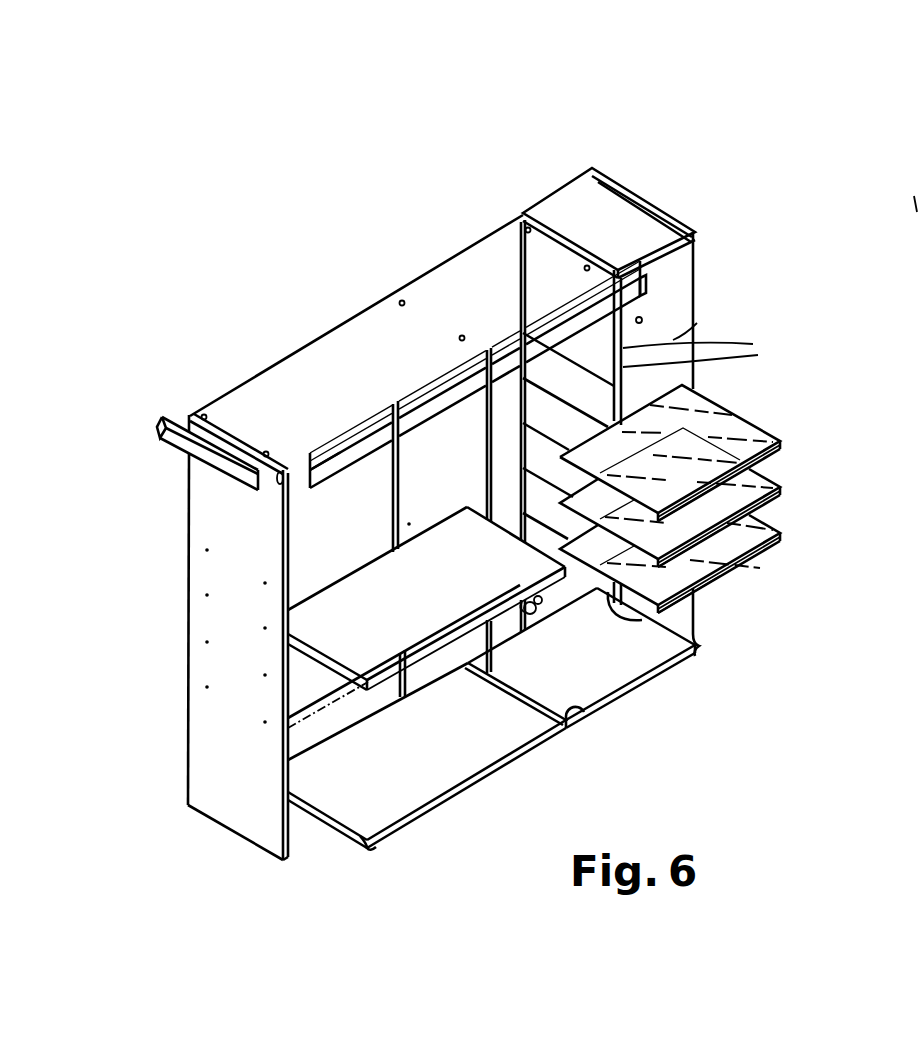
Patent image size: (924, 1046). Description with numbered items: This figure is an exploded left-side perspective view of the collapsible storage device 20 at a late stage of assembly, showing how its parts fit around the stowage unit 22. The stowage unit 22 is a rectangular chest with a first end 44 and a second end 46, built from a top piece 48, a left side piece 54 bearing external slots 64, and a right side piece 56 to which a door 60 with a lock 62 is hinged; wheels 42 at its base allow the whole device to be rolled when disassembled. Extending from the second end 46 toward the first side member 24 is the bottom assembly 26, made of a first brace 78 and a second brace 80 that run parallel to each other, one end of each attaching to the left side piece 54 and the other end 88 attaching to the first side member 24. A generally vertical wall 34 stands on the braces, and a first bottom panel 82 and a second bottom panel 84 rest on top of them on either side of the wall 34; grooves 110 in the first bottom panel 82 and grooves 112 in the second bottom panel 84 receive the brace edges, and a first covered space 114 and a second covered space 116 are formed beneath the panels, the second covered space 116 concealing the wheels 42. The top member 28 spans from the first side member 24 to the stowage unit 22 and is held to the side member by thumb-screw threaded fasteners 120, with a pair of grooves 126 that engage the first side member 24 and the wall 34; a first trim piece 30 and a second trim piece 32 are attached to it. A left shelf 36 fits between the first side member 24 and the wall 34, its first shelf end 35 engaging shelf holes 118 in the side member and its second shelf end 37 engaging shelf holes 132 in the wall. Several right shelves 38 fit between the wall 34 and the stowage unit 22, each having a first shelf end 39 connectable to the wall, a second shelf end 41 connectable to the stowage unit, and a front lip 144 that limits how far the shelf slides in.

The collapsible storage device 20 is at (404, 225).
The stowage unit 22 is at (664, 210).
The first side member 24 is at (235, 800).
The bottom assembly 26 is at (636, 692).
The top member 28 is at (332, 370).
The first trim piece 30 is at (158, 427).
The second trim piece 32 is at (334, 490).
The vertical wall 34 is at (428, 455).
The first shelf end 35 is at (327, 647).
The left shelf 36 is at (398, 612).
The second shelf end 37 is at (500, 512).
The right shelves 38 is at (745, 427).
The first shelf end 39 is at (683, 585).
The second shelf end 41 is at (740, 425).
The wheels 42 is at (544, 597).
The first end 44 is at (607, 172).
The second end 46 is at (683, 617).
The top piece 48 is at (612, 210).
The left side piece 54 is at (697, 323).
The right side piece 56 is at (602, 168).
The door 60 is at (680, 263).
The lock 62 is at (645, 318).
The external slots 64 is at (707, 353).
The first brace 78 is at (308, 828).
The second brace 80 is at (338, 702).
The first bottom panel 82 is at (460, 770).
The second bottom panel 84 is at (680, 661).
The other end 88 is at (305, 842).
The grooves 110 is at (372, 850).
The grooves 112 is at (580, 716).
The first covered space 114 is at (313, 745).
The second covered space 116 is at (495, 633).
The shelf holes 118 is at (205, 552).
The threaded fasteners 120 is at (265, 450).
The grooves 126 is at (283, 470).
The shelf holes 132 is at (407, 522).
The front lip 144 is at (770, 460).